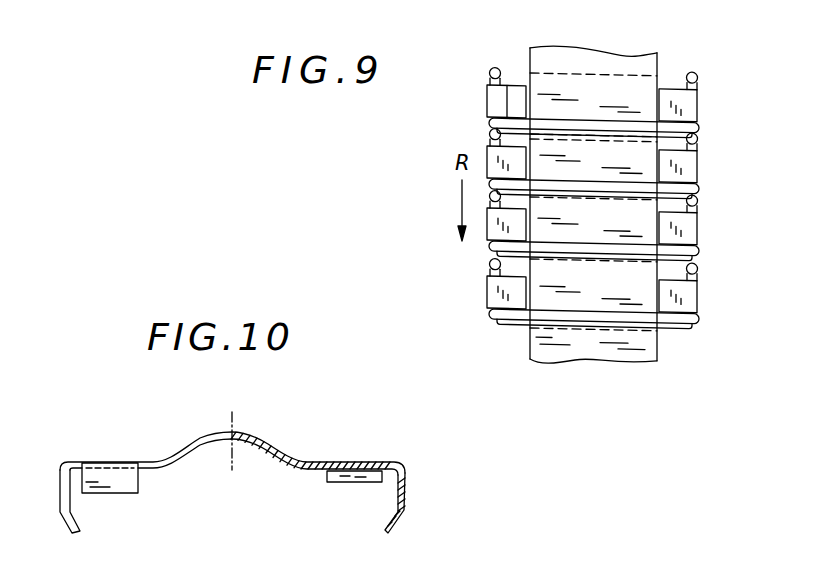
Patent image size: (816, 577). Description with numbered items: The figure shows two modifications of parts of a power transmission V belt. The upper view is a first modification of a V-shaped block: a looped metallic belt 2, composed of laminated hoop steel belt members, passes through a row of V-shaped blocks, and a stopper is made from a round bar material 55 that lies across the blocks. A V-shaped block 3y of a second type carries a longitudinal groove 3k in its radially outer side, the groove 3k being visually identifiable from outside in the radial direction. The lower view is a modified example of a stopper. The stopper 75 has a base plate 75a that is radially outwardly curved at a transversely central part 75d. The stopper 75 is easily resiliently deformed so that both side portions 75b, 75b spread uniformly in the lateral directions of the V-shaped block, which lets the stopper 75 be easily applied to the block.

In FIG. 9, the metallic belt 2 is at (549, 44).
In FIG. 9, the longitudinal groove 3k is at (497, 105).
In FIG. 9, the V-shaped block of a second type 3y is at (690, 102).
In FIG. 9, the round bar material 55 is at (670, 184).
In FIG. 10, the stopper 75 is at (101, 436).
In FIG. 10, the transversely central part 75d is at (223, 431).
In FIG. 10, the base plate 75a is at (355, 461).
In FIG. 10, the side portions 75b is at (407, 487).